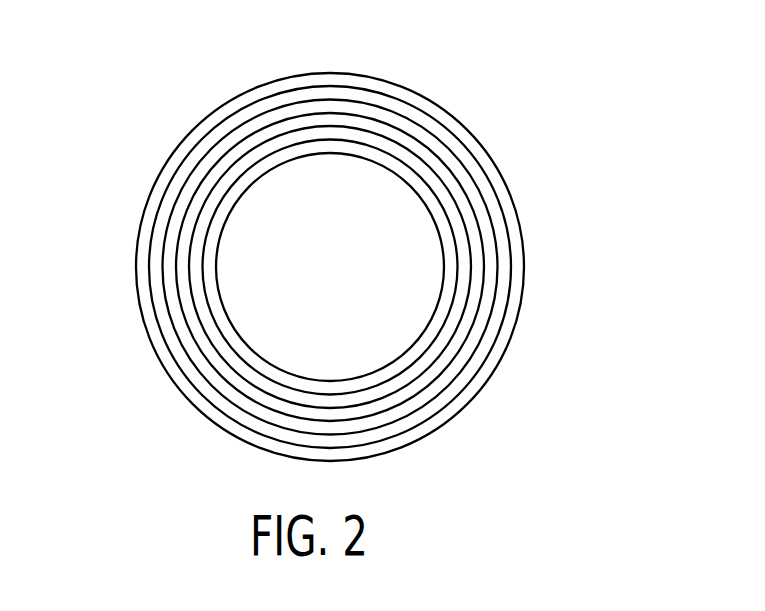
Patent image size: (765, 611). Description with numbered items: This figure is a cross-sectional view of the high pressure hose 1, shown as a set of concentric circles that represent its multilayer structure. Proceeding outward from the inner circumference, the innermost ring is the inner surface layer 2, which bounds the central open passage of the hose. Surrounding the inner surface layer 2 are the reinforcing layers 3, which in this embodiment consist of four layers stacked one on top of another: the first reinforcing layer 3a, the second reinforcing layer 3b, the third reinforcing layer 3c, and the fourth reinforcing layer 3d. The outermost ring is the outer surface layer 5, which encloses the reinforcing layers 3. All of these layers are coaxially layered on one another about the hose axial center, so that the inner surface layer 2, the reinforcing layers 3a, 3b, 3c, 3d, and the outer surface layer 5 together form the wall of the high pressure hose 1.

The high pressure hose 1 is at (151, 177).
The inner surface layer 2 is at (417, 348).
The reinforcing layers 3 is at (615, 127).
The first reinforcing layer 3a is at (383, 143).
The second reinforcing layer 3b is at (425, 153).
The third reinforcing layer 3c is at (462, 168).
The fourth reinforcing layer 3d is at (488, 193).
The outer surface layer 5 is at (160, 342).